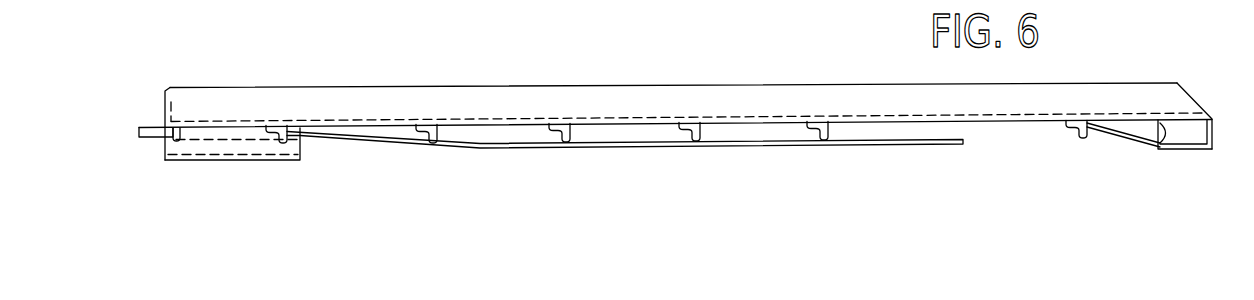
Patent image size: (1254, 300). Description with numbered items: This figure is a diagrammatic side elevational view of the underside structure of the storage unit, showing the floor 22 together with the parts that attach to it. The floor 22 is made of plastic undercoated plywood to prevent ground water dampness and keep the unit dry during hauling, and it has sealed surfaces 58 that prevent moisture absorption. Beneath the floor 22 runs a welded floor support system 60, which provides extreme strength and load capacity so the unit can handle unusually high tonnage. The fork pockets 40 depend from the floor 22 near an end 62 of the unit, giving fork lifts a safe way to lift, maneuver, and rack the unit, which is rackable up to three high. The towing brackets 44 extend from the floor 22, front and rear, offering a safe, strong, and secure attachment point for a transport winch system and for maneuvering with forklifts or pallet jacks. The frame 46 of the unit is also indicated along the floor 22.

The floor 22 is at (656, 116).
The fork pockets 40 is at (258, 165).
The towing brackets 44 is at (138, 122).
The frame 46 is at (347, 88).
The sealed surfaces 58 is at (463, 98).
The welded floor support system 60 is at (569, 123).
The end 62 is at (163, 108).